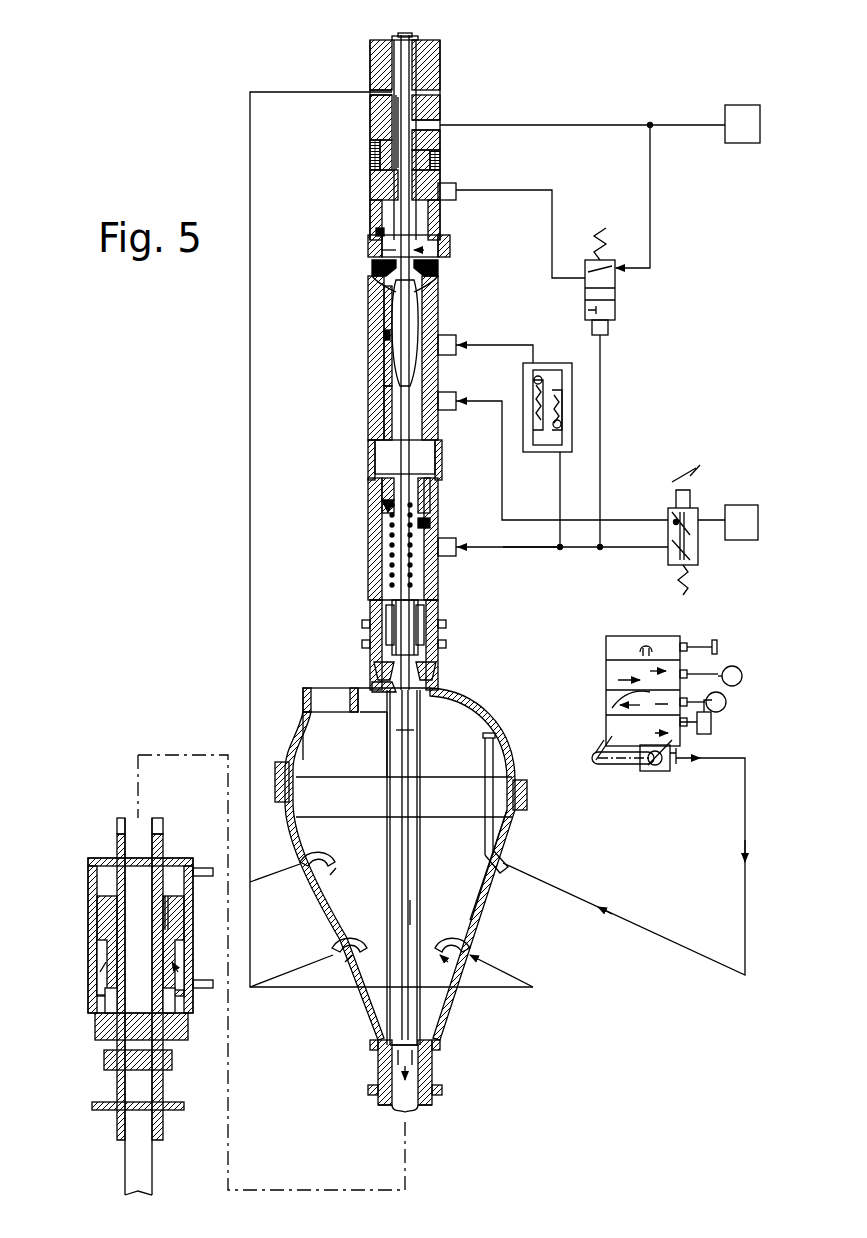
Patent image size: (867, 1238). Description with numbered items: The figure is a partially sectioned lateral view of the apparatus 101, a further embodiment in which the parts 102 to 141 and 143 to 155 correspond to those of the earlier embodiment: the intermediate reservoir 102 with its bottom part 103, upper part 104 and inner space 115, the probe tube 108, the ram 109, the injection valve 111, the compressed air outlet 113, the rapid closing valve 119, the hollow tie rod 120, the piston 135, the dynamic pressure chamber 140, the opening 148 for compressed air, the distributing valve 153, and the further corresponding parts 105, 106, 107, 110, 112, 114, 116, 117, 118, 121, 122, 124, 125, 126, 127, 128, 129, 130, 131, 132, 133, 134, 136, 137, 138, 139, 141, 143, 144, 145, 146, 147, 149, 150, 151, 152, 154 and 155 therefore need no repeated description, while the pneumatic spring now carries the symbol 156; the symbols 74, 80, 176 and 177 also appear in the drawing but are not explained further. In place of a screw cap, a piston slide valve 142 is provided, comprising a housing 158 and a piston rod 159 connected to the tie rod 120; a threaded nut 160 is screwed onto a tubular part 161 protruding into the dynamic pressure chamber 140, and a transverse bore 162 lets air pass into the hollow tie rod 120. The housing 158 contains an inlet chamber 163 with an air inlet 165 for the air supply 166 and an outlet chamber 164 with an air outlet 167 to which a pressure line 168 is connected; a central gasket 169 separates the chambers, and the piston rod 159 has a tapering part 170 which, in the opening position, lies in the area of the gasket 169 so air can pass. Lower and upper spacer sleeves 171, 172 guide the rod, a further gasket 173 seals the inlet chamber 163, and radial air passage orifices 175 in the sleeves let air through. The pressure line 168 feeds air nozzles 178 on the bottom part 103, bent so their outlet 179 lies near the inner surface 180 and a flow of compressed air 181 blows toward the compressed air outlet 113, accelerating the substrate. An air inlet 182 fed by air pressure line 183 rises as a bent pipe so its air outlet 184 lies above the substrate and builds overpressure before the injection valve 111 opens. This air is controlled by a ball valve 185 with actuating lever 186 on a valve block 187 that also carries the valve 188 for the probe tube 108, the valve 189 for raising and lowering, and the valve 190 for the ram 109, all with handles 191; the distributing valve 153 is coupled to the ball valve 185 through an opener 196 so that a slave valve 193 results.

The needle rod 74 is at (398, 48).
The valve rod 80 is at (395, 905).
The apparatus 101 is at (308, 390).
The intermediate reservoir 102 is at (508, 843).
The bottom part 103 is at (478, 925).
The upper part 104 is at (592, 738).
The flange 105 is at (527, 794).
The outlet nozzle 106 is at (436, 1082).
The seal sleeve 107 is at (138, 955).
The probe tube 108 is at (125, 1168).
The ram 109 is at (88, 918).
The bearing plate 110 is at (95, 1028).
The injection valve 111 is at (436, 1057).
The nozzle seat 112 is at (388, 1048).
The compressed air outlet 113 is at (392, 1062).
The inner tube 114 is at (387, 930).
The inner space 115 is at (458, 928).
The housing cover 116 is at (303, 700).
The partition plate right 117 is at (440, 792).
The partition plate 118 is at (398, 772).
The rapid closing valve 119 is at (444, 658).
The tie rod 120 is at (416, 595).
The valve seat left 121 is at (378, 664).
The valve seat right 122 is at (436, 676).
The chamber 124 is at (384, 712).
The sealing ring 125 is at (372, 684).
The valve body 126 is at (424, 640).
The valve housing 127 is at (370, 608).
The piston right 128 is at (432, 494).
The piston left 129 is at (382, 506).
The seal ring 130 is at (432, 522).
The guide block 131 is at (420, 474).
The spring 132 is at (390, 580).
The cylinder wall 133 is at (372, 540).
The piston chamber 134 is at (440, 300).
The piston 135 is at (374, 268).
The inner sleeve 136 is at (386, 300).
The lower sleeve 137 is at (384, 367).
The seal 138 is at (384, 336).
The guide 139 is at (385, 474).
The dynamic pressure chamber 140 is at (432, 241).
The valve ring 141 is at (452, 245).
The piston slide valve 142 is at (452, 67).
The valve channel 143 is at (440, 266).
The housing wall 144 is at (368, 296).
The pressure line 145 is at (538, 548).
The pressure line 146 is at (530, 521).
The pressure line 147 is at (493, 350).
The opening 148 is at (458, 190).
The pressure relief valve 149 is at (616, 288).
The return line 150 is at (600, 378).
The bore 151 is at (412, 728).
The directional valve 152 is at (672, 555).
The distributing valve 153 is at (700, 570).
The solenoid 154 is at (676, 520).
The hydraulic accumulator 155 is at (538, 452).
The pneumatic spring 156 is at (440, 562).
The housing 158 is at (372, 104).
The piston rod 159 is at (412, 40).
The threaded nut 160 is at (380, 251).
The tubular part 161 is at (376, 232).
The transverse bore 162 is at (428, 252).
The inlet chamber 163 is at (440, 158).
The outlet chamber 164 is at (374, 64).
The air inlet 165 is at (446, 125).
The air supply 166 is at (664, 124).
The air outlet 167 is at (330, 92).
The pressure line 168 is at (250, 446).
The gasket 169 is at (428, 122).
The tapering part 170 is at (394, 138).
The lower spacer sleeve 171 is at (370, 154).
The upper spacer sleeve 172 is at (430, 58).
The gasket 173 is at (372, 184).
The radial air passage orifices 175 is at (420, 92).
The control unit 176 is at (734, 505).
The pressure source 177 is at (738, 143).
The air nozzles 178 is at (320, 860).
The outlet 179 is at (330, 863).
The inner surface 180 is at (490, 900).
The flow of compressed air 181 is at (330, 875).
The air inlet 182 is at (485, 828).
The air pressure line 183 is at (624, 866).
The air outlet 184 is at (492, 733).
The ball valve 185 is at (660, 771).
The actuating lever 186 is at (608, 764).
The valve block 187 is at (606, 640).
The valve 188 is at (606, 712).
The valve 189 is at (606, 686).
The valve 190 is at (606, 660).
The handles 191 is at (714, 640).
The slave valve 193 is at (588, 758).
The opener 196 is at (712, 724).